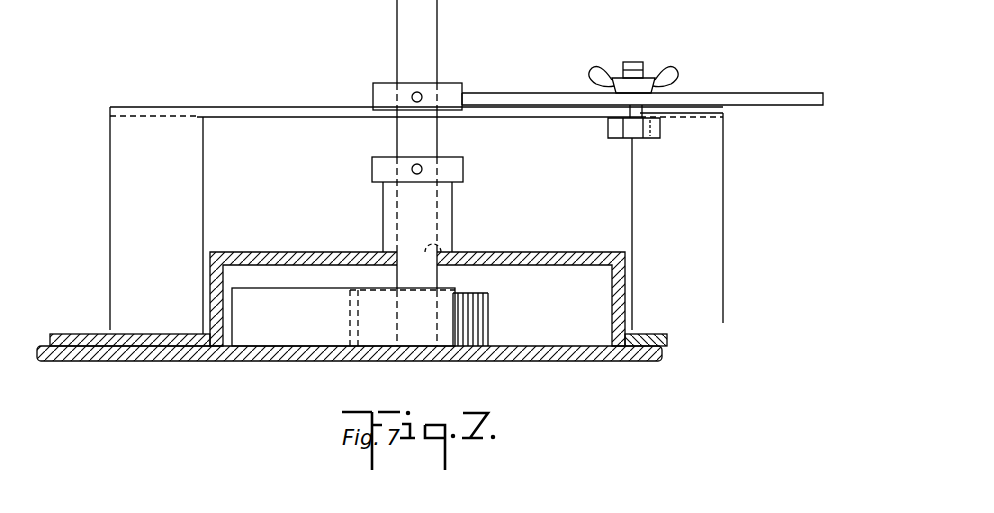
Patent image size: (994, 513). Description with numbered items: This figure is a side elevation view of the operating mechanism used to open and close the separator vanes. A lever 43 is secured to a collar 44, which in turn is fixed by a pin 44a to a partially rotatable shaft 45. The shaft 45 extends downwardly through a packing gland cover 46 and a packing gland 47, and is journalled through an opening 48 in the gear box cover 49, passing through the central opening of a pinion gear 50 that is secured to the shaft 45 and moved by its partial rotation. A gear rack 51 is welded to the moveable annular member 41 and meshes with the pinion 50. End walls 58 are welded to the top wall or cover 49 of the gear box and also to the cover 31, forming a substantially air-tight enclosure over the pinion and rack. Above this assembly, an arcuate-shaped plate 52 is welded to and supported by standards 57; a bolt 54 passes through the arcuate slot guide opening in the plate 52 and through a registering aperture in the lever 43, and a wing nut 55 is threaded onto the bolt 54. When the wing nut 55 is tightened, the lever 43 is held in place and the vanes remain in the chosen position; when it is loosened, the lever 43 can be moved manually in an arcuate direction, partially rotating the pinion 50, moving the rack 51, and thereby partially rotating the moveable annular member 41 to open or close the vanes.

The cover 31 is at (132, 334).
The moveable annular member 41 is at (248, 362).
The lever 43 is at (785, 93).
The collar 44 is at (385, 88).
The pin 44a is at (443, 88).
The shaft 45 is at (407, 131).
The packing gland cover 46 is at (463, 170).
The packing gland 47 is at (452, 200).
The opening 48 is at (437, 232).
The gear box cover 49 is at (540, 252).
The pinion gear 50 is at (492, 307).
The gear rack 51 is at (300, 322).
The arcuate-shaped plate 52 is at (276, 107).
The bolt 54 is at (636, 62).
The wing nut 55 is at (663, 73).
The standards 57 is at (126, 204).
The end walls 58 is at (212, 284).